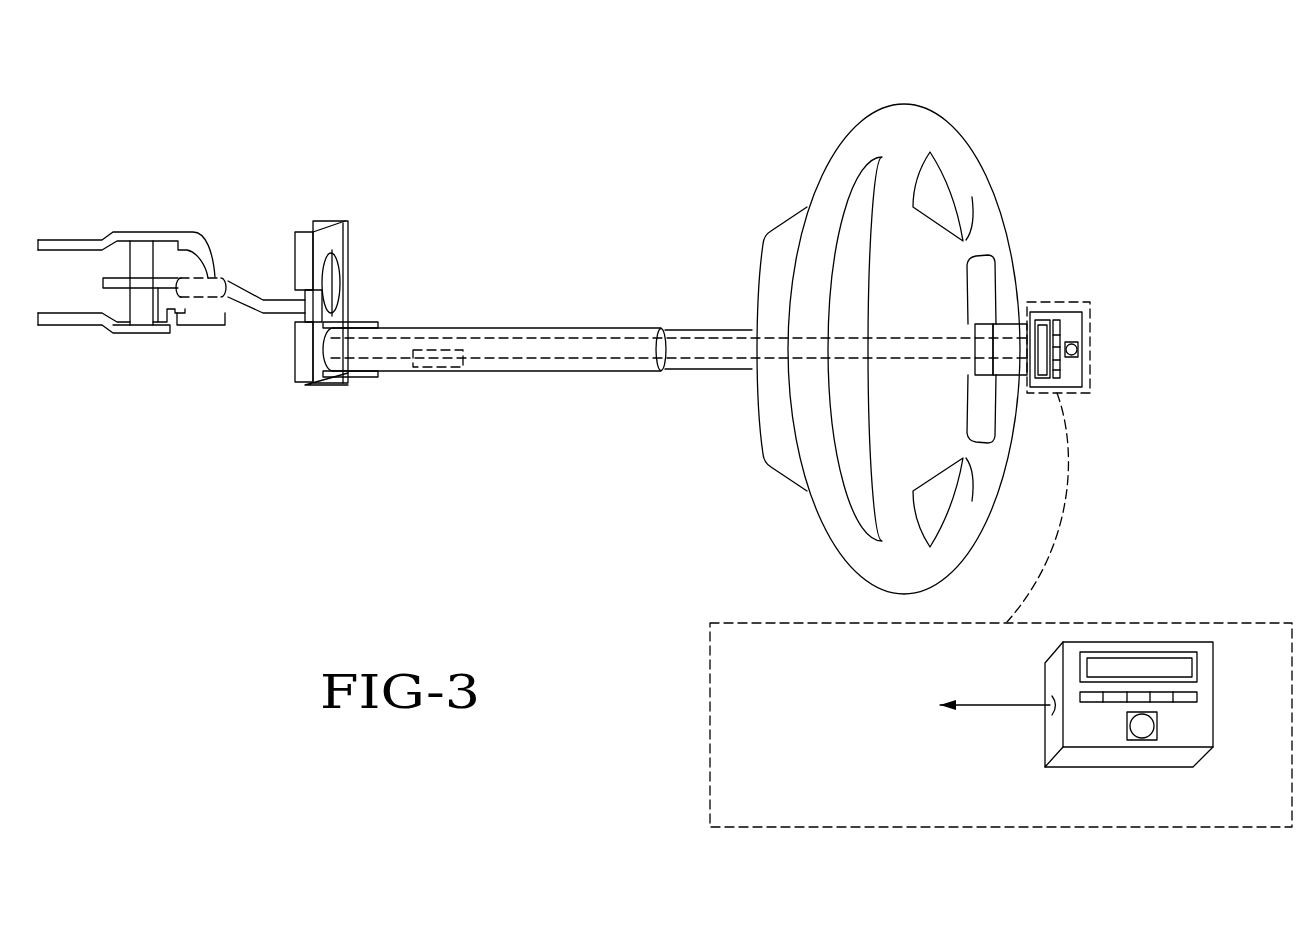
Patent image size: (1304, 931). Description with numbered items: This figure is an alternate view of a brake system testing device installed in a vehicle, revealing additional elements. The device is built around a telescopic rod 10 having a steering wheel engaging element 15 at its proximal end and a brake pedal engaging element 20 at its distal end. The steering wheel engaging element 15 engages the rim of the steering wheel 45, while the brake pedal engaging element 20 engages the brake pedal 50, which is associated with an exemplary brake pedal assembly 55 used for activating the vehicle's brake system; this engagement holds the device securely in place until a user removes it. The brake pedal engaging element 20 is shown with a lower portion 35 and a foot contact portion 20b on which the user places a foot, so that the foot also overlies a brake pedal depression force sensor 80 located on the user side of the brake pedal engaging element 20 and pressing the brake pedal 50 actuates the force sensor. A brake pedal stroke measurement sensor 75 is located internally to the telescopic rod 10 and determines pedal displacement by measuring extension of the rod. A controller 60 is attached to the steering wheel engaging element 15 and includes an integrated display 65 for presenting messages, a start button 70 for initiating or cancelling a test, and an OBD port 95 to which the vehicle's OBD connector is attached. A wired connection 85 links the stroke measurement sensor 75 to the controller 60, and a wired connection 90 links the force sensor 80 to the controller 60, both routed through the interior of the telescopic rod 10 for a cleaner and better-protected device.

The telescopic rod 10 is at (675, 359).
The steering wheel engaging element 15 is at (1001, 325).
The brake pedal engaging element 20 is at (261, 296).
The foot contact portion 20b is at (320, 243).
The bracket lower portion 35 is at (302, 350).
The steering wheel 45 is at (937, 349).
The brake pedal 50 is at (385, 252).
The brake pedal assembly 55 is at (129, 211).
The controller 60 is at (1089, 365).
The display 65 is at (1175, 668).
The start button 70 is at (1140, 728).
The brake pedal stroke measurement sensor 75 is at (442, 367).
The brake pedal depression force sensor 80 is at (334, 280).
The wired connection 85 is at (586, 357).
The wired connection 90 is at (542, 337).
The OBD port 95 is at (1050, 712).